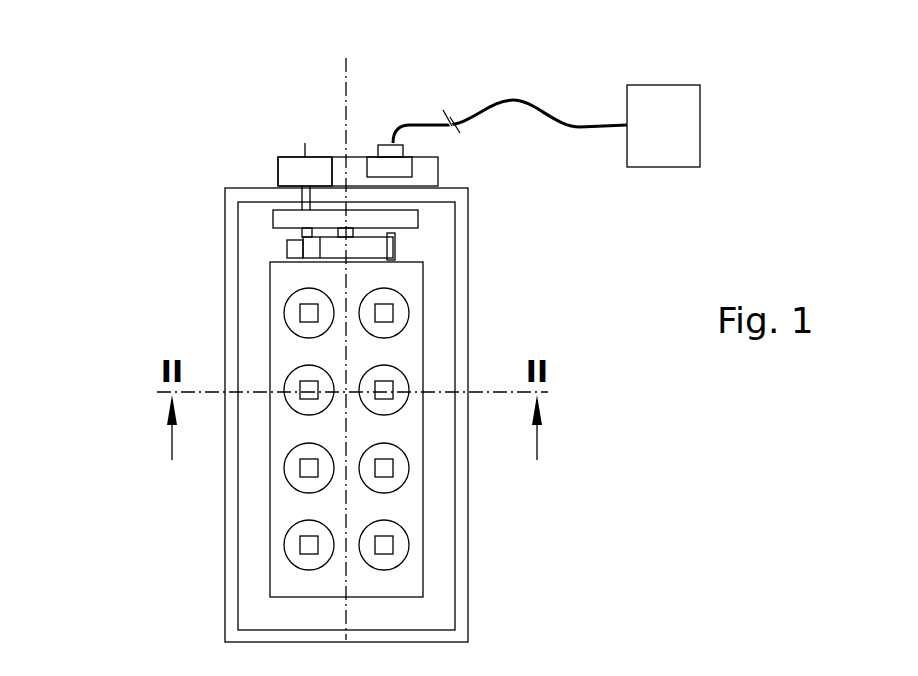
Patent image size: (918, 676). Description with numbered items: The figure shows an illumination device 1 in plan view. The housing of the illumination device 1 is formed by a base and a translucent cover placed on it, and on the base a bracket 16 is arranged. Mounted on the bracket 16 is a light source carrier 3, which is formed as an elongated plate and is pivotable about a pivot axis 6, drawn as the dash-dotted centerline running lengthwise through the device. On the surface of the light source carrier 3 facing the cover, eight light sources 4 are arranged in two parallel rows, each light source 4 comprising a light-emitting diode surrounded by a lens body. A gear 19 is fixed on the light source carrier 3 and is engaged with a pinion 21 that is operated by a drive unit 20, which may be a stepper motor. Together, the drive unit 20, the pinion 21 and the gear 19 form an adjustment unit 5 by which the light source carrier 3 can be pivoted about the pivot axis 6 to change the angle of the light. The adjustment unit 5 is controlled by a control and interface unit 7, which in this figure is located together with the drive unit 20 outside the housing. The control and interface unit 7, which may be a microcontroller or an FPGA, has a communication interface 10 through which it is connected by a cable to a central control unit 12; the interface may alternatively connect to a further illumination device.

The illumination device 1 is at (152, 530).
The light source carrier 3 is at (397, 503).
The light source 4 is at (308, 545).
The adjustment unit 5 is at (262, 157).
The pivot axis 6 is at (345, 77).
The control and interface unit 7 is at (422, 172).
The communication interface 10 is at (373, 157).
The central control unit 12 is at (653, 143).
The bracket 16 is at (287, 222).
The gear 19 is at (372, 247).
The drive unit 20 is at (287, 157).
The pinion 21 is at (303, 247).